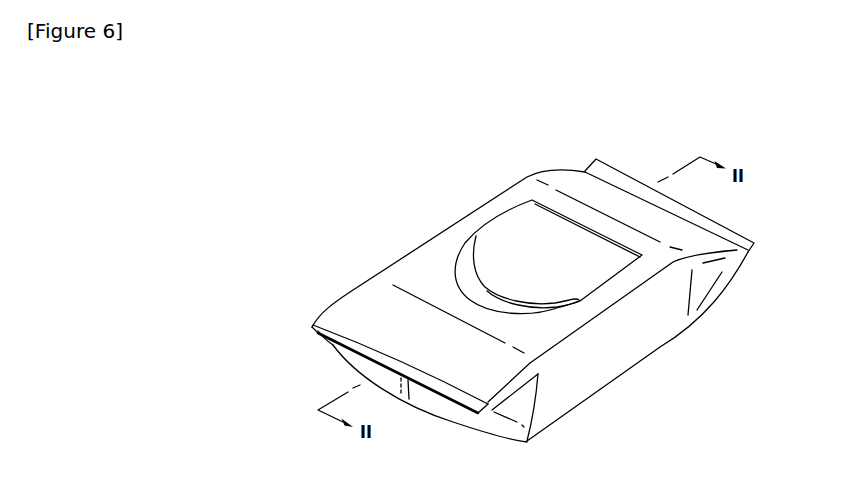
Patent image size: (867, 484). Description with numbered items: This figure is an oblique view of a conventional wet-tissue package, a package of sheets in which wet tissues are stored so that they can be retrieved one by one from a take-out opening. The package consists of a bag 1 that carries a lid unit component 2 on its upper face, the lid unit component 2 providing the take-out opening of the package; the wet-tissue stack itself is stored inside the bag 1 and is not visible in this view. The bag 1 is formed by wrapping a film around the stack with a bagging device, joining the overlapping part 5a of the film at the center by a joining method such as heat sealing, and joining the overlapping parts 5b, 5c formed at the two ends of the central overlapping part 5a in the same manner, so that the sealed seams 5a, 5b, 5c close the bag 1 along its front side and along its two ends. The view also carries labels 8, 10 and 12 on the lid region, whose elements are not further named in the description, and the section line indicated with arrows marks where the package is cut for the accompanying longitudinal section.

The bag 1 is at (661, 347).
The lid unit component 2 is at (517, 203).
The overlapping part 5a is at (403, 397).
The overlapping part 5b is at (627, 182).
The overlapping part 5c is at (323, 332).
The rake face 8 is at (502, 247).
The chip breaker wall 10 is at (566, 208).
The breaker groove 12 is at (472, 283).